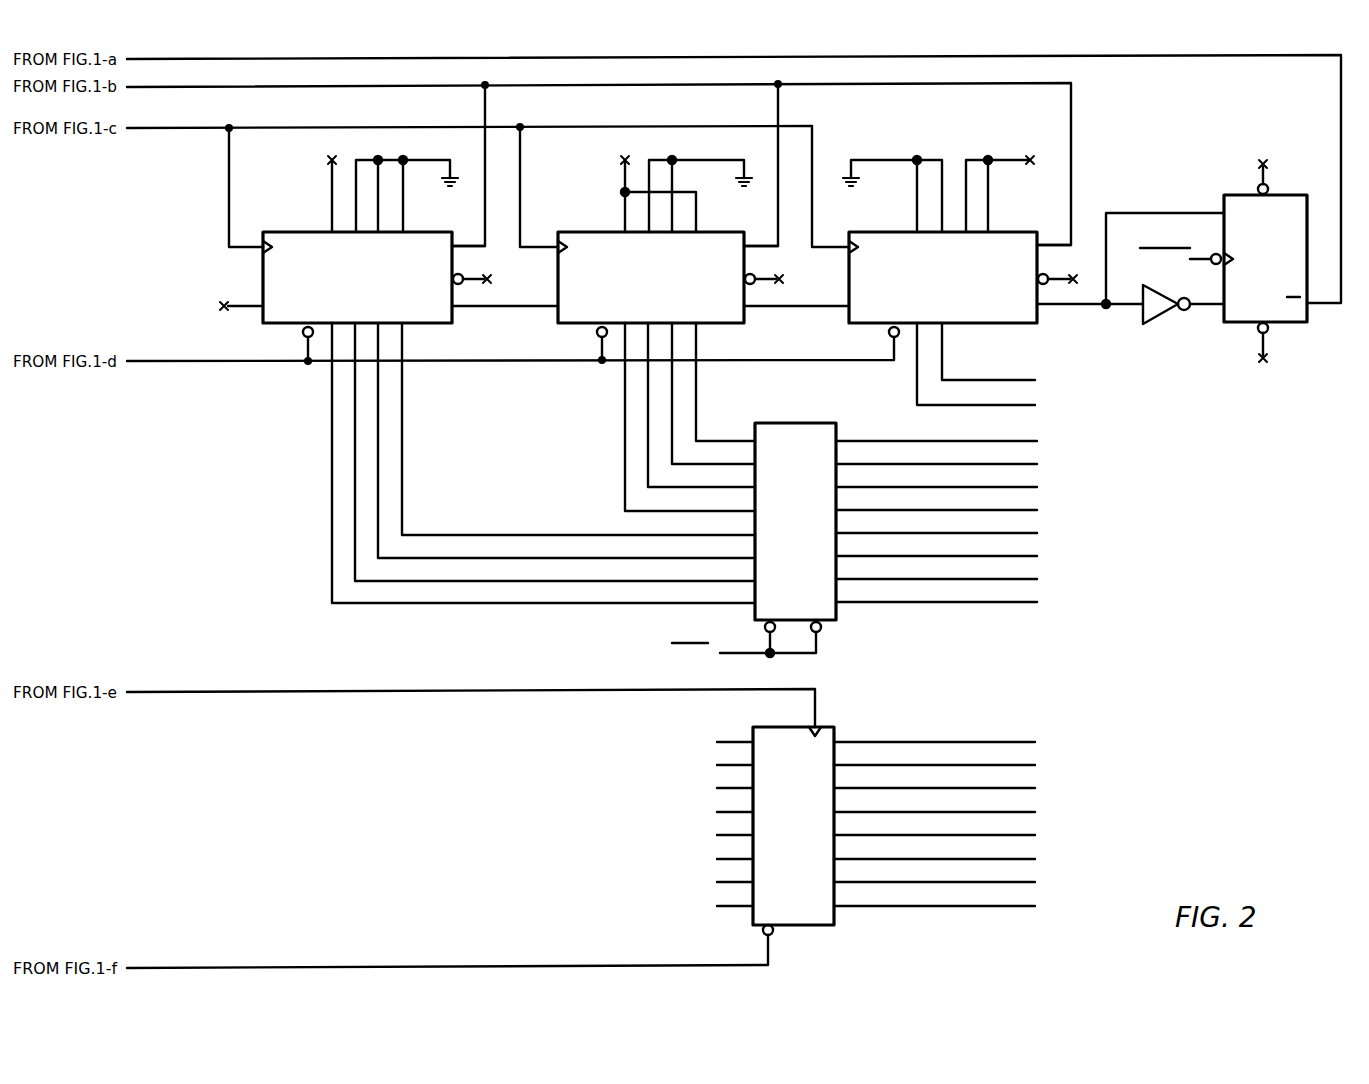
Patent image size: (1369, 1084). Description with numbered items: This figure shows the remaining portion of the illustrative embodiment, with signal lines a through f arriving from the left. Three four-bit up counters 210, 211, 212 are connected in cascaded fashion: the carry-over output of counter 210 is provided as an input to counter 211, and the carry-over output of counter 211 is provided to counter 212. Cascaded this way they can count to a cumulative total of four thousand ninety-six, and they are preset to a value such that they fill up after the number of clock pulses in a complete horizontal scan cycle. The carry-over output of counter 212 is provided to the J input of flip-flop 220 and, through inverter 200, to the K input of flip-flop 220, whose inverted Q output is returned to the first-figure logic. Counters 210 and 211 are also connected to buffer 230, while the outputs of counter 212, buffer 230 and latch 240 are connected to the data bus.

The inverter 200 is at (1150, 325).
The counter 210 is at (294, 232).
The counter 211 is at (589, 232).
The counter 212 is at (880, 232).
The flip-flop 220 is at (1237, 195).
The buffer 230 is at (800, 423).
The latch 240 is at (830, 727).